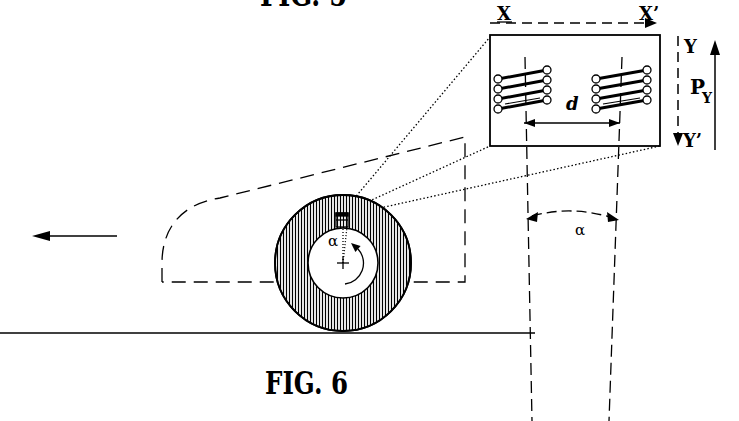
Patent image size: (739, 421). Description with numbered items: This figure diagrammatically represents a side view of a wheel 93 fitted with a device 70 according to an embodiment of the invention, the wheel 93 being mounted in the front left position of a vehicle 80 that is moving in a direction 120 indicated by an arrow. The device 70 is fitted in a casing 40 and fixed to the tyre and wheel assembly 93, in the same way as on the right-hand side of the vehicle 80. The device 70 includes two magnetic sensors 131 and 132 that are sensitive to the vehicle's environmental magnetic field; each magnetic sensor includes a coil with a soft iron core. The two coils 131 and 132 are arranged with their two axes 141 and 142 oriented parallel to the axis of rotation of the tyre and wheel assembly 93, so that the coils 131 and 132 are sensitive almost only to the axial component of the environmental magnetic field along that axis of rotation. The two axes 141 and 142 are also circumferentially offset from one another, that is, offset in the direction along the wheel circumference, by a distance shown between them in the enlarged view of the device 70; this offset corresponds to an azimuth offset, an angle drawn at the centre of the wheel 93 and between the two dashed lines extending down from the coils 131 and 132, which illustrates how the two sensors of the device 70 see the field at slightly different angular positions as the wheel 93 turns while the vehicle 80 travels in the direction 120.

The casing 40 is at (336, 220).
The device 70 is at (490, 52).
The vehicle 80 is at (453, 247).
The wheel 93 is at (381, 300).
The direction 120 is at (74, 249).
The magnetic sensor 131 is at (512, 103).
The magnetic sensor 132 is at (640, 98).
The axis 141 is at (524, 71).
The axis 142 is at (618, 70).